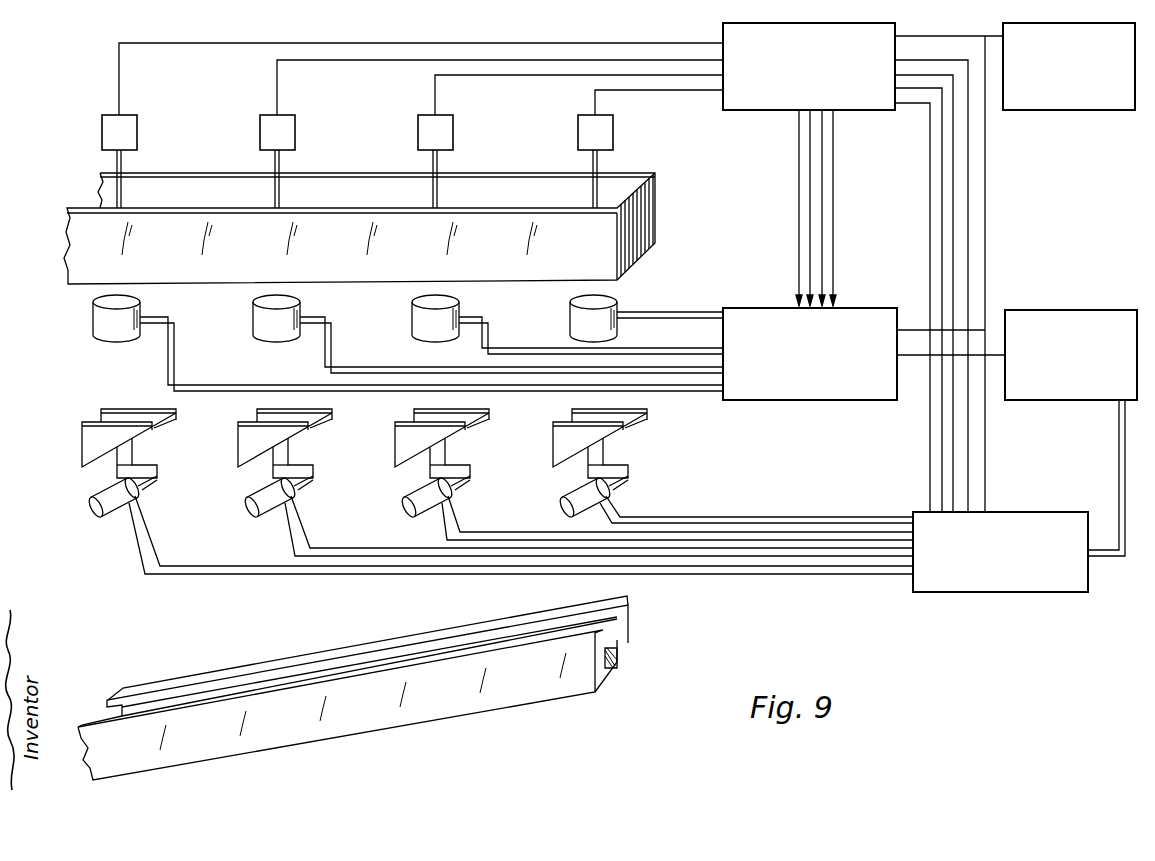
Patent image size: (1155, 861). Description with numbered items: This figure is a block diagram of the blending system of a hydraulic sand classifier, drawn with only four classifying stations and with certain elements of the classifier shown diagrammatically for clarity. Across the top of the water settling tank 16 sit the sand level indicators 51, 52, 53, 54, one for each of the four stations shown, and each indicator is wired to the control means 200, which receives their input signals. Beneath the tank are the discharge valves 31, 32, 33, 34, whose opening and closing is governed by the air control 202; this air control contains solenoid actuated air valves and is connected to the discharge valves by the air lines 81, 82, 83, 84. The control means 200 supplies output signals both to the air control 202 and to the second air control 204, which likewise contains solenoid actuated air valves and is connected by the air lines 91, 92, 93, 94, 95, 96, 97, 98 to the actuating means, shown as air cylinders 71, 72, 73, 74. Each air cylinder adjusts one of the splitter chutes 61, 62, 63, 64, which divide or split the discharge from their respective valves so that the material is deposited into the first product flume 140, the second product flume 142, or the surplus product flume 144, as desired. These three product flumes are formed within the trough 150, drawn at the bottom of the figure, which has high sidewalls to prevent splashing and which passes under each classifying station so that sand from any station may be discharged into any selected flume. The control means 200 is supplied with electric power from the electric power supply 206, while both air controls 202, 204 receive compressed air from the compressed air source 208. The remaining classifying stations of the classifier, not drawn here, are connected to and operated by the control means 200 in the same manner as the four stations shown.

The water settling tank 16 is at (652, 202).
The discharge valve 31 is at (570, 316).
The discharge valve 32 is at (412, 320).
The discharge valve 33 is at (253, 320).
The discharge valve 34 is at (141, 312).
The sand level indicator 51 is at (606, 165).
The sand level indicator 52 is at (446, 165).
The sand level indicator 53 is at (288, 165).
The sand level indicator 54 is at (130, 165).
The splitter chute 61 is at (553, 436).
The splitter chute 62 is at (395, 438).
The splitter chute 63 is at (238, 439).
The splitter chute 64 is at (82, 439).
The air cylinder 71 is at (580, 493).
The air cylinder 72 is at (422, 493).
The air cylinder 73 is at (264, 495).
The air cylinder 74 is at (108, 495).
The air line 81 is at (664, 314).
The air line 82 is at (648, 354).
The air line 83 is at (688, 368).
The air line 84 is at (686, 392).
The air line 91 is at (670, 515).
The air line 92 is at (582, 521).
The air line 93 is at (462, 525).
The air line 94 is at (436, 532).
The air line 95 is at (306, 538).
The air line 96 is at (293, 546).
The air line 97 is at (160, 557).
The air line 98 is at (140, 567).
The first product flume 140 is at (610, 662).
The second product flume 142 is at (626, 623).
The surplus product flume 144 is at (623, 652).
The trough 150 is at (531, 700).
The control means 200 is at (818, 28).
The air control 202 is at (785, 399).
The air control 204 is at (993, 593).
The electric power supply 206 is at (1078, 27).
The compressed air source 208 is at (1081, 300).